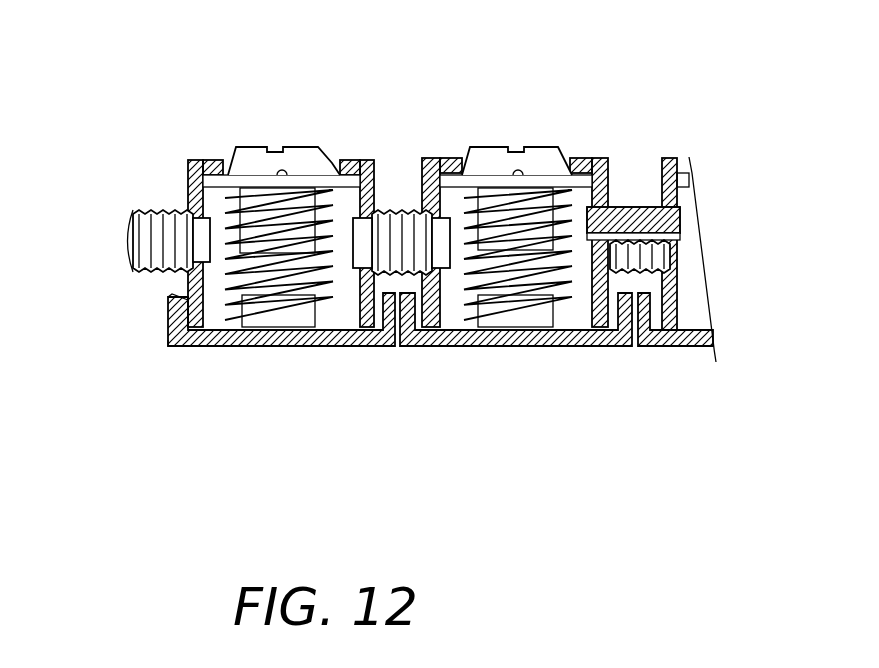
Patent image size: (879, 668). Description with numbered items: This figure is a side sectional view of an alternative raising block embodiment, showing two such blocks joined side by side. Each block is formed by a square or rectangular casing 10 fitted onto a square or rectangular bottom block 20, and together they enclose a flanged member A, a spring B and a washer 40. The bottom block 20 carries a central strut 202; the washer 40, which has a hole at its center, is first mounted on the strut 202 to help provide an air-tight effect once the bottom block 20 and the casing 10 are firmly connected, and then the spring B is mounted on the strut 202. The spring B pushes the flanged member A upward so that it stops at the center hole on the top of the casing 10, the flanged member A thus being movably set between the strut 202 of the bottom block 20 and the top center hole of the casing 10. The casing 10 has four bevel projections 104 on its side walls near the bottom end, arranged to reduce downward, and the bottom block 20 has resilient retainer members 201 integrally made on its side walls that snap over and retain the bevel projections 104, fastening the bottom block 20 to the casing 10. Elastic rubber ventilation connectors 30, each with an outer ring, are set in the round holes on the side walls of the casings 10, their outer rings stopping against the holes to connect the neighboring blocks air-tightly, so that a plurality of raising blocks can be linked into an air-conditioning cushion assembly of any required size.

The casing 10 is at (206, 158).
The bottom block 20 is at (172, 331).
The resilient retainer members 201 is at (170, 303).
The bevel projections 104 is at (170, 346).
The washer 40 is at (352, 346).
The central strut 202 is at (252, 310).
The elastic rubber ventilation connector 30 is at (165, 207).
The flanged member A is at (302, 147).
The spring B is at (343, 158).